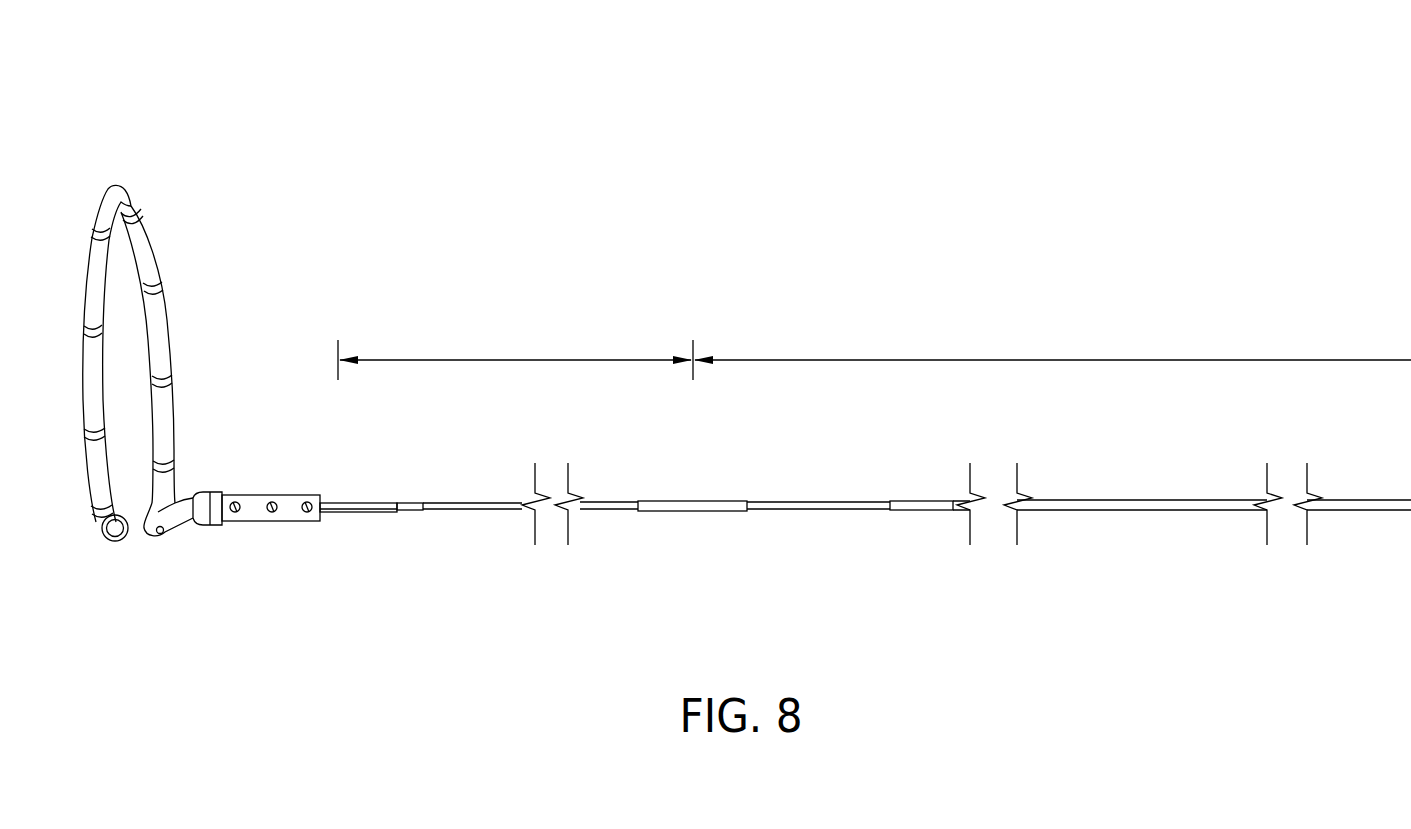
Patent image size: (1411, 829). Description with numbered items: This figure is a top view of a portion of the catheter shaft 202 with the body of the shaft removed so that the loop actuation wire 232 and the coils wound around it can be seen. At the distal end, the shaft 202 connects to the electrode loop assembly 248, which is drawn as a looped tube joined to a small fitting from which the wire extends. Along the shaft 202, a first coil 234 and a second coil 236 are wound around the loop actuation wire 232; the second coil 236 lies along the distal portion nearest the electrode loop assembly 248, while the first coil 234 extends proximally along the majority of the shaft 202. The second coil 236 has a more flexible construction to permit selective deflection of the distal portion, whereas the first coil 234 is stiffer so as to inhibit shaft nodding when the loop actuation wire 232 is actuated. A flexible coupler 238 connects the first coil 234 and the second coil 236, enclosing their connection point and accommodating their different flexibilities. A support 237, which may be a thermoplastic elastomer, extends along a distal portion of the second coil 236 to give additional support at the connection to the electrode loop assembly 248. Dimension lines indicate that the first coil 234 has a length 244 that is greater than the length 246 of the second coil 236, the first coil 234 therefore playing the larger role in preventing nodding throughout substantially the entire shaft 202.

The shaft 202 is at (1226, 588).
The loop actuation wire 232 is at (1125, 500).
The first coil 234 is at (838, 502).
The second coil 236 is at (460, 503).
The support 237 is at (358, 503).
The flexible coupler 238 is at (692, 500).
The length of first coil 244 is at (995, 360).
The length of second coil 246 is at (514, 360).
The electrode loop assembly 248 is at (137, 155).